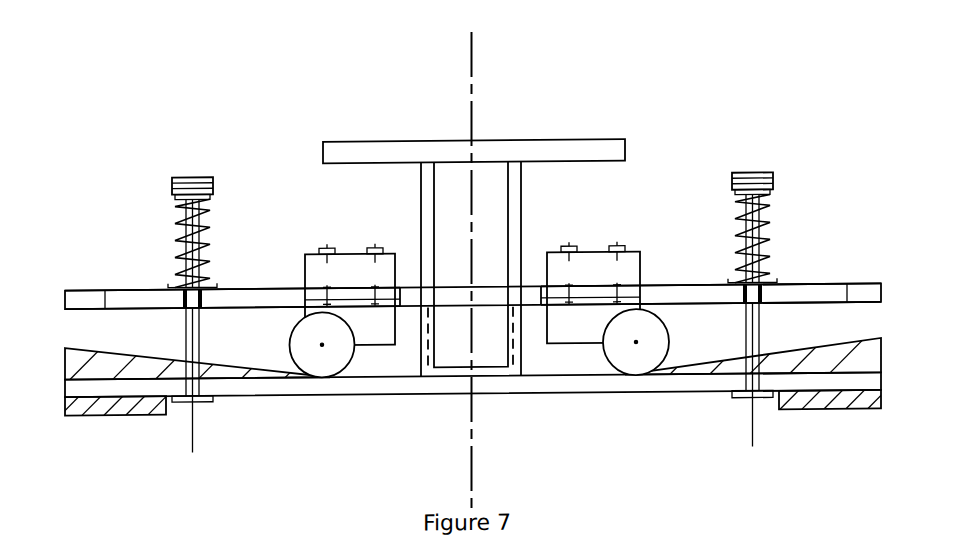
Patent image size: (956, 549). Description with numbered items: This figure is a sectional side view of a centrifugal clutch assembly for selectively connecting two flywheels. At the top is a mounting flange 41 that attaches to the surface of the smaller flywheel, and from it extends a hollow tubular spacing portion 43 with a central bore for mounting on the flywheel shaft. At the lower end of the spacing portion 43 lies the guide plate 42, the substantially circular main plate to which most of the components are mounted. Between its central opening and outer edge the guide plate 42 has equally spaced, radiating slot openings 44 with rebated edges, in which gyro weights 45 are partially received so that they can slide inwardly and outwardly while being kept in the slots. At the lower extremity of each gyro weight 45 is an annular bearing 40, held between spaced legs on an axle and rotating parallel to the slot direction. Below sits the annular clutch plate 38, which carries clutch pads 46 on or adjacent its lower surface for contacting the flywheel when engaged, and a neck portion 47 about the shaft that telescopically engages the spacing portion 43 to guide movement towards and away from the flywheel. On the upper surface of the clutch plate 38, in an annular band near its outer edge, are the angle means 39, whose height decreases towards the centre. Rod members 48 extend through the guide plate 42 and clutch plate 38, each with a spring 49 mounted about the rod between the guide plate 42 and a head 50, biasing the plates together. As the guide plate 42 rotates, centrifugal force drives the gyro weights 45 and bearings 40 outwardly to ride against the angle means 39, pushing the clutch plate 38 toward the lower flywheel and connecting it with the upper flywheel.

The clutch plate 38 is at (378, 388).
The angle means 39 is at (63, 350).
The bearing means 40 is at (305, 375).
The mounting flange 41 is at (573, 139).
The guide plate 42 is at (70, 286).
The spacing portion 43 is at (437, 191).
The slot openings 44 is at (150, 286).
The gyro weights 45 is at (308, 251).
The clutch pads 46 is at (128, 414).
The neck portion 47 is at (516, 369).
The rod members 48 is at (736, 308).
The spring 49 is at (771, 223).
The head 50 is at (203, 173).